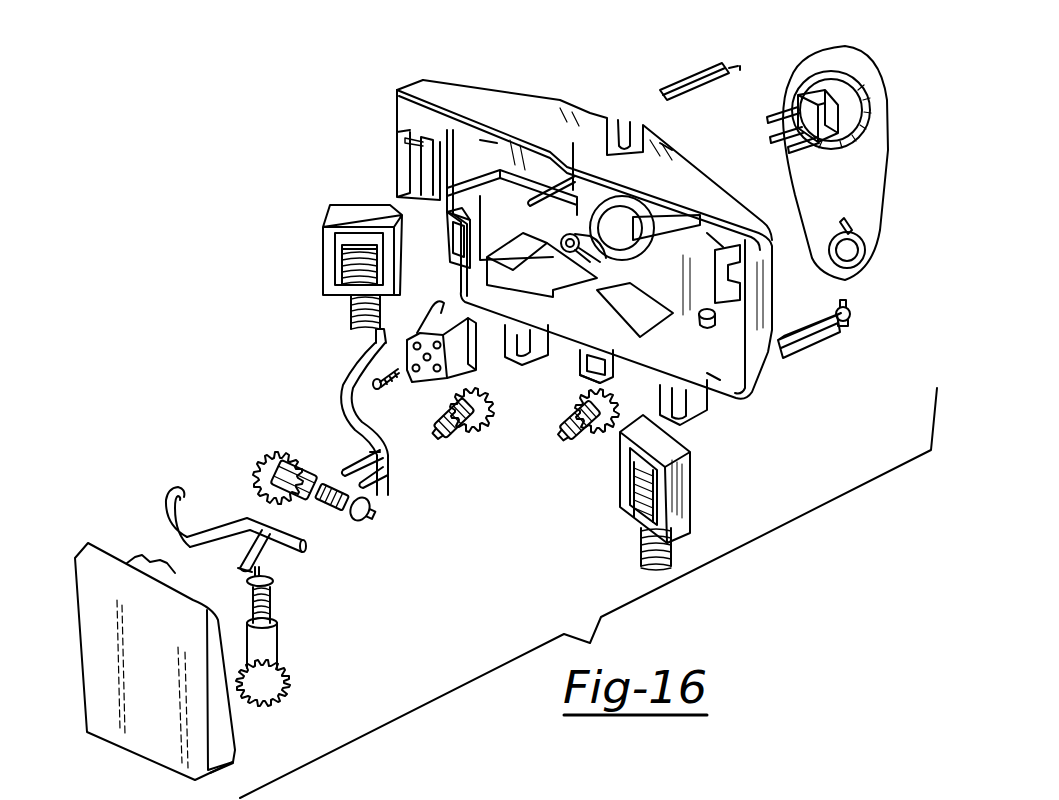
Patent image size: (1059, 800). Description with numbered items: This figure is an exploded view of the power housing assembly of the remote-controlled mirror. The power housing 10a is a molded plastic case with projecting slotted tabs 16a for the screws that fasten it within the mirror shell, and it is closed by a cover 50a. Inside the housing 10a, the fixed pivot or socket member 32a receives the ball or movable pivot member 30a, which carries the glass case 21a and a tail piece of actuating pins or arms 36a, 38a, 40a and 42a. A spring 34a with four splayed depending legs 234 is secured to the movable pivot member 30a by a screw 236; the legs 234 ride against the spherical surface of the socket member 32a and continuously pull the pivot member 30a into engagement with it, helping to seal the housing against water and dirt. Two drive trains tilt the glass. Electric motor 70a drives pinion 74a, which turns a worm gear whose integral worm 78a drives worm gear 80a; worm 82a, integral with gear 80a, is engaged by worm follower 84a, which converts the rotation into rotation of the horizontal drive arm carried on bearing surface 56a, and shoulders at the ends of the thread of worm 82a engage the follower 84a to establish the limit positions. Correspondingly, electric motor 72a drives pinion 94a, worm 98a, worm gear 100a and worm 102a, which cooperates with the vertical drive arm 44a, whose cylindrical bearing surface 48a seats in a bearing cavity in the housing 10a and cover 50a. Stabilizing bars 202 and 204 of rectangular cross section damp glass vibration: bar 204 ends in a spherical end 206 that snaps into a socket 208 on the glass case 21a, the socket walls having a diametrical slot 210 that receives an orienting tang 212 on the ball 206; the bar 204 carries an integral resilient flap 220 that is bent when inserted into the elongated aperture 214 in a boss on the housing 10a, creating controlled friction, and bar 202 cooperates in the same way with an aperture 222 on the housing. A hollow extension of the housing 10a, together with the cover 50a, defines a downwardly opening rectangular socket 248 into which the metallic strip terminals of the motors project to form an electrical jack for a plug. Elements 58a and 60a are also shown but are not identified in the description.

The power housing 10a is at (530, 97).
The projecting slotted tab 16a is at (663, 143).
The glass case 21a is at (877, 160).
The movable pivot member 30a is at (857, 100).
The socket member 32a is at (590, 262).
The spring 34a is at (443, 435).
The actuating pin or arm 36a is at (822, 90).
The actuating pin or arm 38a is at (767, 118).
The actuating pin or arm 40a is at (772, 138).
The actuating pin or arm 42a is at (792, 150).
The vertical drive arm 44a is at (210, 552).
The circular cylindrical bearing surface 48a is at (285, 510).
The cover 50a is at (122, 735).
The circular cylindrical bearing surface 56a is at (388, 447).
The hook 58a is at (190, 530).
The lever 60a is at (345, 378).
The electric motor 70a is at (337, 215).
The electric motor 72a is at (687, 477).
The pinion 74a is at (352, 312).
The worm 78a is at (455, 432).
The worm gear 80a is at (280, 460).
The worm 82a is at (338, 510).
The worm follower mechanism 84a is at (357, 452).
The pinion 94a is at (640, 533).
The worm 98a is at (581, 433).
The worm gear 100a is at (290, 675).
The worm 102a is at (273, 603).
The bar 202 is at (714, 66).
The bar 204 is at (782, 358).
The spherical end 206 is at (852, 317).
The socket 208 is at (857, 252).
The diametrical slot 210 is at (851, 225).
The orienting tang 212 is at (845, 302).
The elongated aperture 214 is at (572, 365).
The flap 220 is at (828, 338).
The aperture 222 is at (457, 227).
The splayed depending legs 234 is at (452, 298).
The screw 236 is at (442, 386).
The socket 248 is at (410, 167).